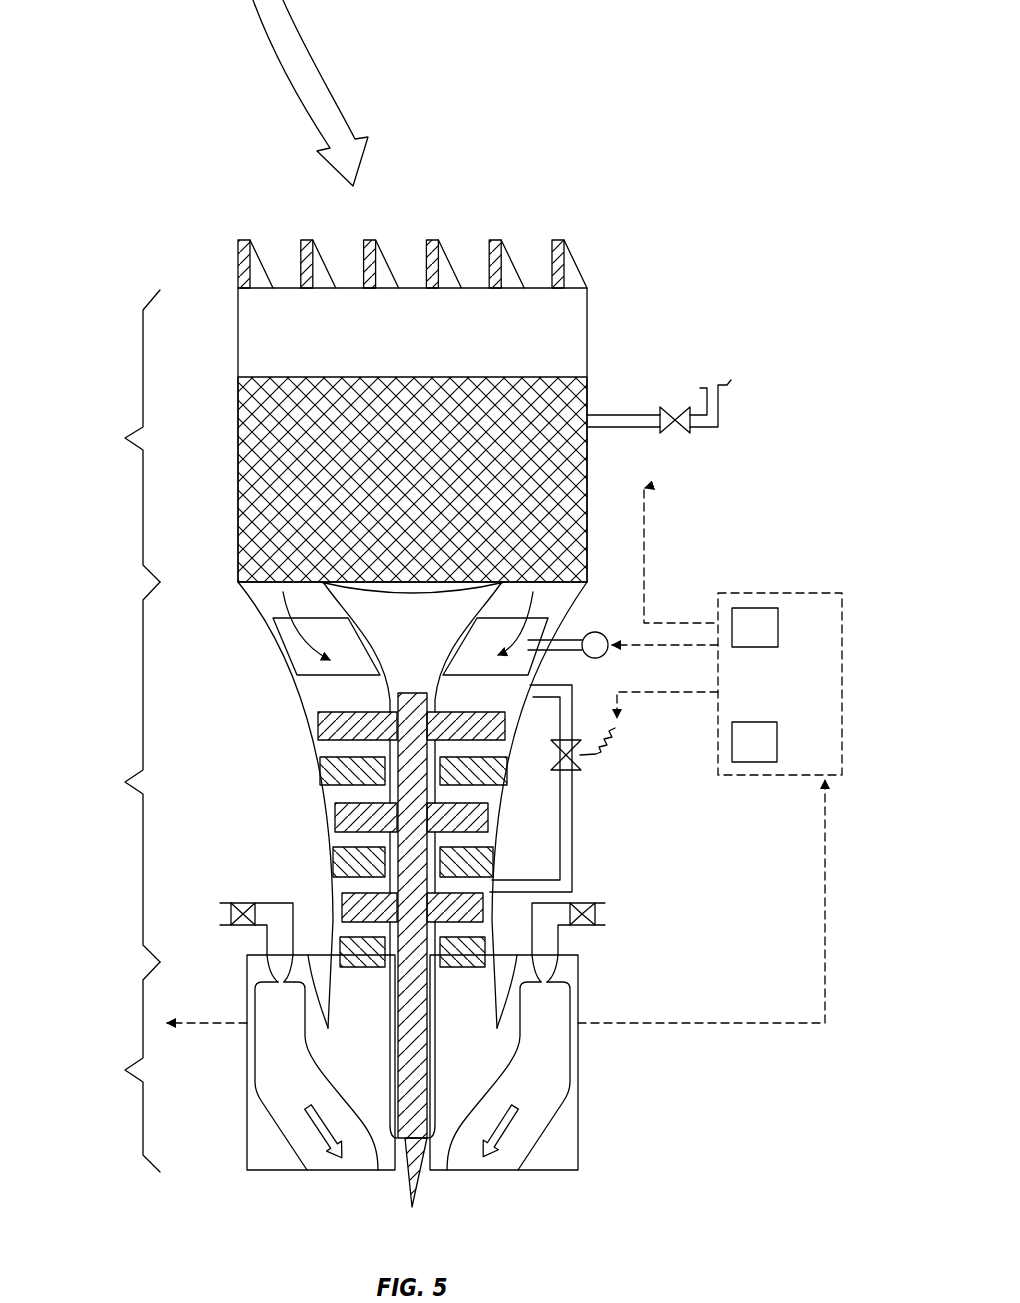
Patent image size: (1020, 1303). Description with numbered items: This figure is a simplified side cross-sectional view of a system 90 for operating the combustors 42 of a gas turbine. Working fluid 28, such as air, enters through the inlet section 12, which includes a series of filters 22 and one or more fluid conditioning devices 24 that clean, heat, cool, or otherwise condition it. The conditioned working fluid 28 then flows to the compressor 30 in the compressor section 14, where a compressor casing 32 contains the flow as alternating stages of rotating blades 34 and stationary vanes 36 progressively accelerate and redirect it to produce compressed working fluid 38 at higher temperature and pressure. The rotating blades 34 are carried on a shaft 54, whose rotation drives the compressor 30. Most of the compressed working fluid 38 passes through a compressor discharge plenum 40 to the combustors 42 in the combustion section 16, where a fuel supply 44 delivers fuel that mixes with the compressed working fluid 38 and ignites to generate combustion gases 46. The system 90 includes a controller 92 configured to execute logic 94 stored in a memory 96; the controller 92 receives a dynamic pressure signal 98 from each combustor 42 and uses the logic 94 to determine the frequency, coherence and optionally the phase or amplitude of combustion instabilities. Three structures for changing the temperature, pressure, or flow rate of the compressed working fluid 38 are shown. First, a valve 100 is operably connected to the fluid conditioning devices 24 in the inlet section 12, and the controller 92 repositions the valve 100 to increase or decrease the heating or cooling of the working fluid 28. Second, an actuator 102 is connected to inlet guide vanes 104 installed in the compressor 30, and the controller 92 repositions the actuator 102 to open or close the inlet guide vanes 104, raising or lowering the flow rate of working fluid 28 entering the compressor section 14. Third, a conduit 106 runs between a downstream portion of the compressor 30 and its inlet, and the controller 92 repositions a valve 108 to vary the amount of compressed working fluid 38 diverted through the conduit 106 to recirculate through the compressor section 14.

The inlet section 12 is at (123, 436).
The compressor section 14 is at (123, 772).
The combustion section 16 is at (123, 1067).
The filters 22 is at (537, 248).
The fluid conditioning devices 24 is at (237, 430).
The working fluid 28 is at (340, 87).
The compressor 30 is at (296, 714).
The compressor casing 32 is at (298, 685).
The rotating blades 34 is at (333, 818).
The stationary vanes 36 is at (507, 777).
The compressed working fluid 38 is at (328, 1057).
The compressor discharge plenum 40 is at (375, 1093).
The combustors 42 is at (256, 1078).
The fuel supply 44 is at (597, 903).
The combustion gases 46 is at (318, 1137).
The shaft 54 is at (423, 1143).
The system 90 is at (806, 356).
The controller 92 is at (843, 692).
The logic 94 is at (745, 641).
The memory 96 is at (745, 756).
The dynamic pressure signal 98 is at (827, 880).
The valve 100 is at (675, 452).
The actuator 102 is at (606, 657).
The inlet guide vanes 104 is at (308, 658).
The conduit 106 is at (573, 853).
The valve 108 is at (580, 768).